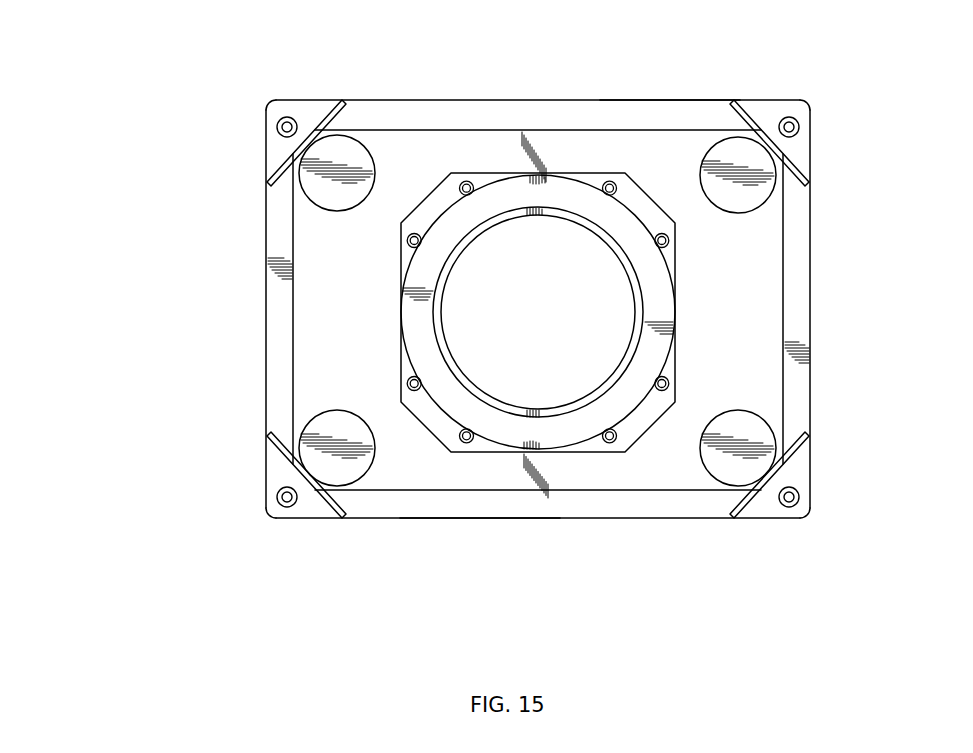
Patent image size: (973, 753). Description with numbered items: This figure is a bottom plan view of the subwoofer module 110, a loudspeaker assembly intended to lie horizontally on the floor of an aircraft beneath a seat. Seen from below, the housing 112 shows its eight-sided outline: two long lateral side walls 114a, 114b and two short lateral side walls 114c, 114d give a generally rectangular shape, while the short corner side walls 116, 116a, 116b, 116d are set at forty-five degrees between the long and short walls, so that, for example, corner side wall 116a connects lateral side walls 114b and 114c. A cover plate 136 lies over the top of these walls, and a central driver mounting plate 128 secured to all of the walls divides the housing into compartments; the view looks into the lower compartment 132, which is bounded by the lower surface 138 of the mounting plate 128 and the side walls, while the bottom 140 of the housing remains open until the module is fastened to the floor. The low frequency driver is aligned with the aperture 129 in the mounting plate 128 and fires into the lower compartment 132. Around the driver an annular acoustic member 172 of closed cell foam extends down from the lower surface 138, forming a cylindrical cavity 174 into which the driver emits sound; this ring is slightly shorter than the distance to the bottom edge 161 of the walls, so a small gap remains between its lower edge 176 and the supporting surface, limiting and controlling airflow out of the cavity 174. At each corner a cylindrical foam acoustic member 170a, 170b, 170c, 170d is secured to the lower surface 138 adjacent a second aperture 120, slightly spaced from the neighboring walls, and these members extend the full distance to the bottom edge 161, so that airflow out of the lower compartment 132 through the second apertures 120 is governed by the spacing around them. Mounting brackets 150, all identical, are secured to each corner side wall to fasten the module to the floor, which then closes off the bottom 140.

The subwoofer module 110 is at (170, 131).
The housing 112 is at (478, 101).
The long lateral side wall 114a is at (602, 110).
The long lateral side wall 114b is at (542, 503).
The short lateral side wall 114c is at (793, 313).
The short lateral side wall 114d is at (267, 320).
The corner side wall 116 is at (328, 147).
The corner side wall 116a is at (798, 447).
The corner side wall 116b is at (753, 112).
The corner side wall 116d is at (276, 473).
The second aperture 120 is at (300, 190).
The central driver mounting plate 128 is at (742, 277).
The aperture 129 is at (470, 237).
The lower compartment 132 is at (312, 275).
The cover plate 136 is at (670, 103).
The lower surface 138 is at (740, 378).
The bottom 140 is at (765, 232).
The mounting bracket 150 is at (272, 128).
The bottom edge 161 is at (472, 510).
The foam acoustic member 170a is at (757, 463).
The foam acoustic member 170b is at (747, 192).
The foam acoustic member 170c is at (307, 101).
The foam acoustic member 170d is at (347, 473).
The annular acoustic member 172 is at (525, 192).
The cylindrical cavity 174 is at (572, 380).
The lower edge 176 is at (423, 350).